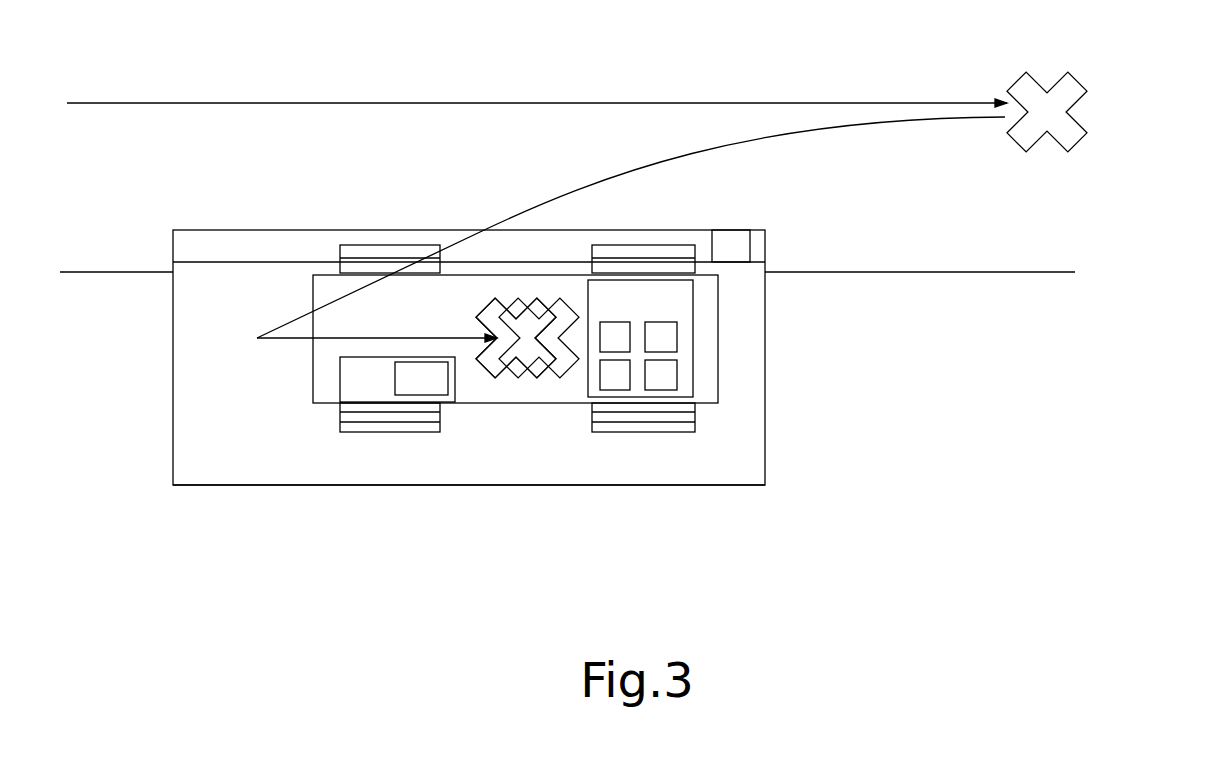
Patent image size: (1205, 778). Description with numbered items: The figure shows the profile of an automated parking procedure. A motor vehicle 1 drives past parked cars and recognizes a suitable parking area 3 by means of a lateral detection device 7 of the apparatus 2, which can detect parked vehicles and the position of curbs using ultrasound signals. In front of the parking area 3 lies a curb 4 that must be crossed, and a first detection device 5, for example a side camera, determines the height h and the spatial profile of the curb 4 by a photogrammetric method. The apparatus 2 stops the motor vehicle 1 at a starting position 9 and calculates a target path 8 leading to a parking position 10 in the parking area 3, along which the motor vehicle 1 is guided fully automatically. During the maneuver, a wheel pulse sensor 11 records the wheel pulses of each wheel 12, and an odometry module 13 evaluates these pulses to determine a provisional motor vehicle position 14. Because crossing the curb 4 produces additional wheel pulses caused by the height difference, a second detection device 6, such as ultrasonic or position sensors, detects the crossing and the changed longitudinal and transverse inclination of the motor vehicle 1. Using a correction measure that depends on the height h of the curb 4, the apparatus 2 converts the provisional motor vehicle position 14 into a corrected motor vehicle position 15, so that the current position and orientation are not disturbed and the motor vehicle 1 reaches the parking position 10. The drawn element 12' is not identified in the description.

The motor vehicle 1 is at (416, 323).
The apparatus 2 is at (631, 313).
The parking area 3 is at (631, 477).
The curb 4 is at (217, 248).
The first detection device 5 is at (632, 337).
The second detection device 6 is at (679, 338).
The lateral detection device 7 is at (679, 375).
The target path 8 is at (862, 121).
The starting position 9 is at (1080, 82).
The parking position 10 is at (489, 378).
The motor vehicle position 15 is at (489, 378).
The wheel pulse sensor 11 is at (421, 378).
The wheel 12 is at (376, 498).
The transponder unit 12' is at (397, 379).
The odometry module 13 is at (692, 398).
The provisional motor vehicle position 14 is at (558, 378).
The height of the curb h is at (735, 240).